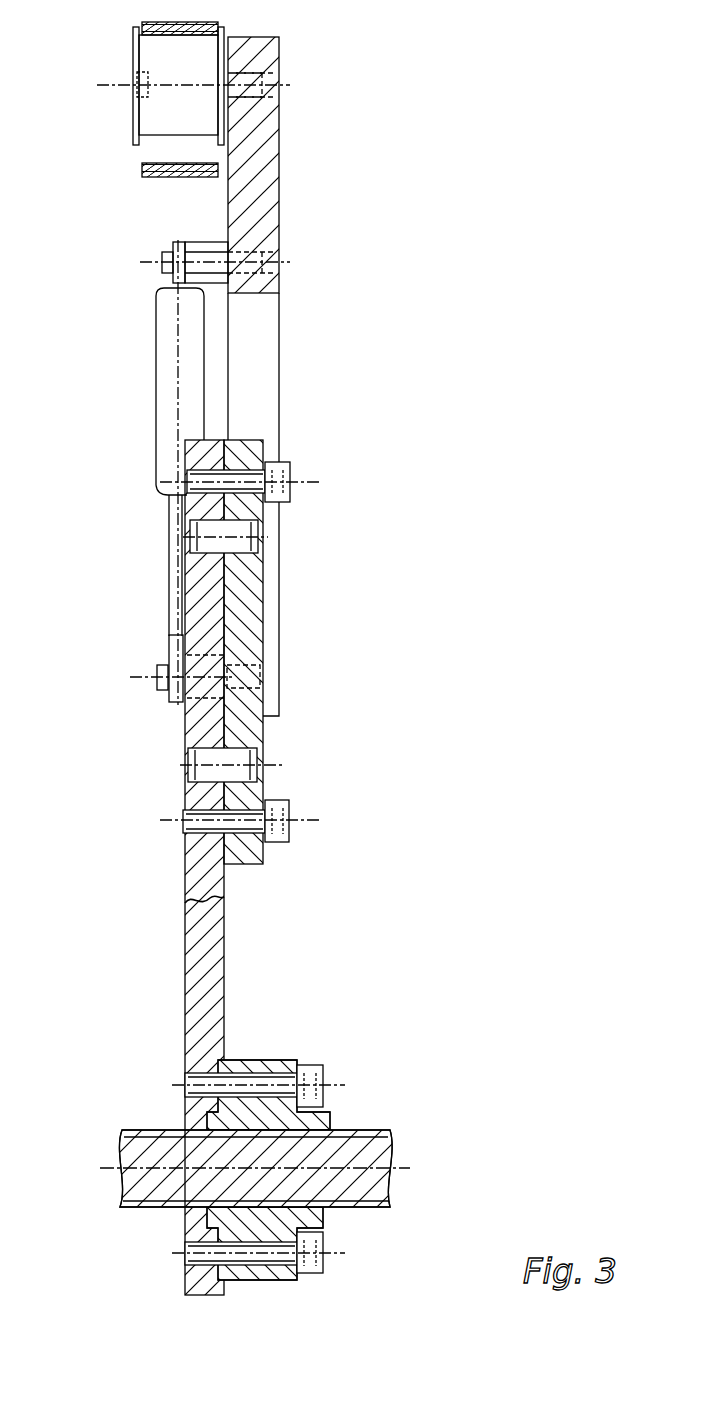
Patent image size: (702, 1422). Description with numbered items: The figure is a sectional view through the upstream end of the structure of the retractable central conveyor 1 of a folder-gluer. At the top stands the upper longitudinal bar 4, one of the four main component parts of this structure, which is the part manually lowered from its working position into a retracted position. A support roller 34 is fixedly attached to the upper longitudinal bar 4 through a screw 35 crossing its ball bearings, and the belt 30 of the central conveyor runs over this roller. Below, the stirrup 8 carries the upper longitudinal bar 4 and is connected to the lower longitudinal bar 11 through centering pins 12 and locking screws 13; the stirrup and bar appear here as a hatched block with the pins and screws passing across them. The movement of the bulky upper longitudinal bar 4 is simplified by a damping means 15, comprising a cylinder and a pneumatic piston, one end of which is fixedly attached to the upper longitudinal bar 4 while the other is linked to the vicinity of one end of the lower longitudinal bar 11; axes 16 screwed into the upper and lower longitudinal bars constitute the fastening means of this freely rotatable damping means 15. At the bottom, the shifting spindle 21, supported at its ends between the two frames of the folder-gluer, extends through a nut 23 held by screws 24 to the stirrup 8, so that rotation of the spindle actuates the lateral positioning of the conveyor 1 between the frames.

The retractable central conveyor 1 is at (527, 974).
The upper longitudinal bar 4 is at (258, 171).
The stirrup 8 is at (208, 600).
The lower longitudinal bar 11 is at (245, 606).
The centering pins 12 is at (245, 540).
The locking screws 13 is at (275, 470).
The damping means 15 is at (168, 390).
The axes 16 is at (162, 262).
The shifting spindle 21 is at (356, 1150).
The nut 23 is at (246, 1105).
The screws 24 is at (307, 1072).
The belt 30 is at (160, 25).
The support roller 34 is at (172, 115).
The screw 35 is at (266, 77).